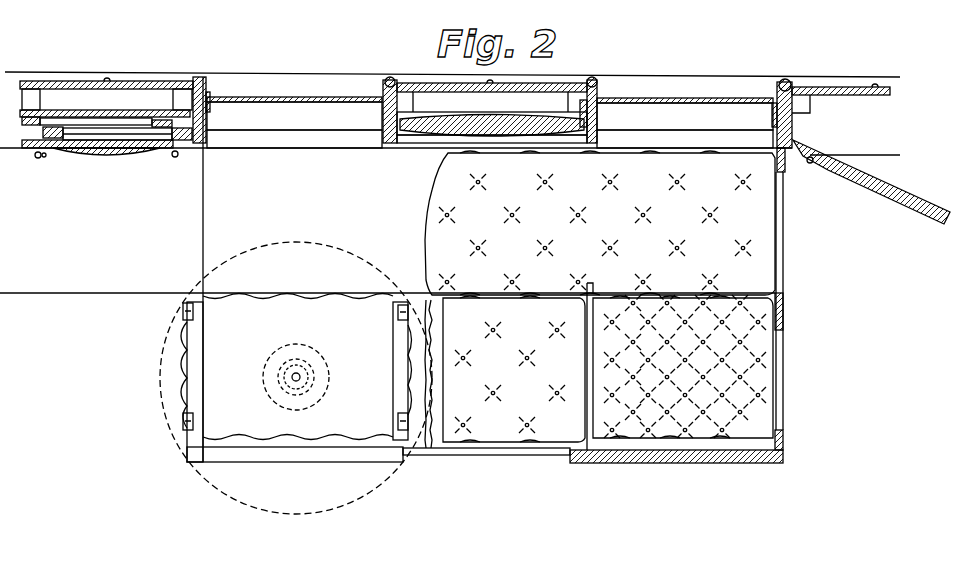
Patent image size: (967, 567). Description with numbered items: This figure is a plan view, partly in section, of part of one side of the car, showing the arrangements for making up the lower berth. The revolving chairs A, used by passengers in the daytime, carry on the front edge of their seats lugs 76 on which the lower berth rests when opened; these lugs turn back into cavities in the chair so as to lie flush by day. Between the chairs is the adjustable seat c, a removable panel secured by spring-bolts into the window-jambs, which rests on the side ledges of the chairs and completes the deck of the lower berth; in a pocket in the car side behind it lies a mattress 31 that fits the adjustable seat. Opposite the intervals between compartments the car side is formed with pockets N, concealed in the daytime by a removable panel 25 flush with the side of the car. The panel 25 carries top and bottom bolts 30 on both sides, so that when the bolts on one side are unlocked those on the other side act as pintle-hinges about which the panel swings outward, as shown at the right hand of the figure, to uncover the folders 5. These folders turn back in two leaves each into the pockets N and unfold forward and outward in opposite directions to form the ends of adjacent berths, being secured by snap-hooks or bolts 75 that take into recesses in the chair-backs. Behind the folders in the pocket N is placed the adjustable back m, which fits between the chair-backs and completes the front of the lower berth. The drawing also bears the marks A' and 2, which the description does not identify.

The pockets N is at (455, 112).
The adjustable back m is at (88, 97).
The folders 5 is at (22, 120).
The removable panel 25 is at (125, 150).
The bolts 30 is at (36, 158).
The adjustable seat c is at (420, 145).
The lens 2 is at (437, 118).
The snap-hooks or bolts 75 is at (784, 447).
The mattress 31 is at (515, 364).
The chairs A is at (298, 367).
The scalloped edge of panel A' is at (296, 375).
The lugs 76 is at (202, 292).